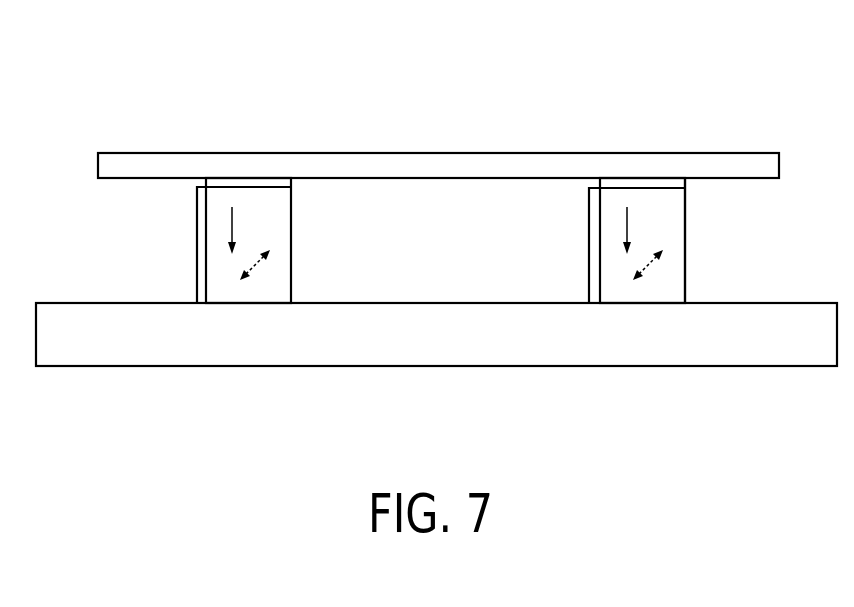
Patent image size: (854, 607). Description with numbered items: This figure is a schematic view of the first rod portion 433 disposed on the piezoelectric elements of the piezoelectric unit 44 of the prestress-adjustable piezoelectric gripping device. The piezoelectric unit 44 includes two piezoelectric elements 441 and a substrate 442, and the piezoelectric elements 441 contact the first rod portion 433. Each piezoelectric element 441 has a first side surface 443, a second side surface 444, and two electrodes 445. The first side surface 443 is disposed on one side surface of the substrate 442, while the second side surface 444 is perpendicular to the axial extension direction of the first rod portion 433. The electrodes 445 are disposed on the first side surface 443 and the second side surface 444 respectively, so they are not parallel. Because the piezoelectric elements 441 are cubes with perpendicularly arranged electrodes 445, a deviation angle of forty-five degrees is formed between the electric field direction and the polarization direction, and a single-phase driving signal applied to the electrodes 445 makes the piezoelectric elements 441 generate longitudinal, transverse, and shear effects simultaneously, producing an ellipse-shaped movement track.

The piezoelectric unit 44 is at (296, 124).
The piezoelectric element 441 is at (685, 228).
The substrate 442 is at (411, 160).
The first side surface 443 is at (632, 188).
The second side surface 444 is at (594, 240).
The electrode 445 is at (660, 185).
The first rod portion 433 is at (434, 342).